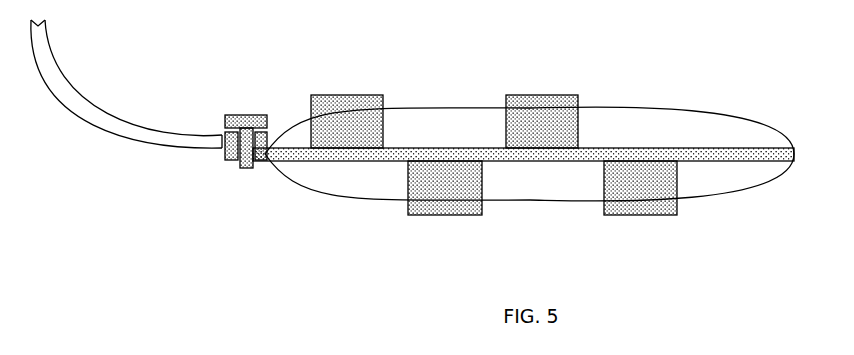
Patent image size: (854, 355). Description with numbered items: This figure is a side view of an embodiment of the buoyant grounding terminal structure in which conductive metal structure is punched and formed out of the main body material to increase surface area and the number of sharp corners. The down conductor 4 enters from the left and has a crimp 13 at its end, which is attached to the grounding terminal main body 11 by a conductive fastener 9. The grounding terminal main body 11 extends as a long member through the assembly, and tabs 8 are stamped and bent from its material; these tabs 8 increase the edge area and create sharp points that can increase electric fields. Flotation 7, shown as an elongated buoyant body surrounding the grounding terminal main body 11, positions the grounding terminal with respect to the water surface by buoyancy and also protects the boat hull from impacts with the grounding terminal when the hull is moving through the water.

The down conductor 4 is at (108, 90).
The flotation 7 is at (677, 100).
The tabs 8 is at (350, 89).
The conductive fastener 9 is at (247, 100).
The grounding terminal main body 11 is at (350, 168).
The crimp 13 is at (222, 150).